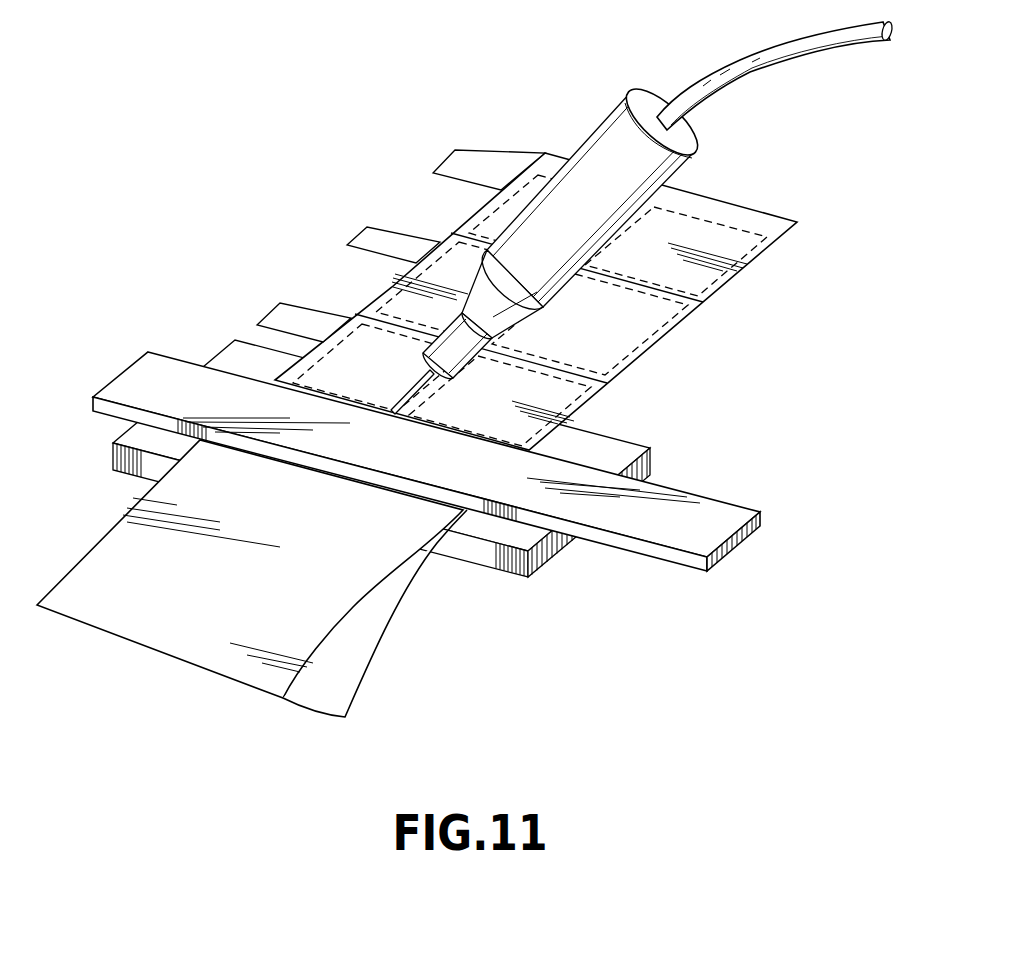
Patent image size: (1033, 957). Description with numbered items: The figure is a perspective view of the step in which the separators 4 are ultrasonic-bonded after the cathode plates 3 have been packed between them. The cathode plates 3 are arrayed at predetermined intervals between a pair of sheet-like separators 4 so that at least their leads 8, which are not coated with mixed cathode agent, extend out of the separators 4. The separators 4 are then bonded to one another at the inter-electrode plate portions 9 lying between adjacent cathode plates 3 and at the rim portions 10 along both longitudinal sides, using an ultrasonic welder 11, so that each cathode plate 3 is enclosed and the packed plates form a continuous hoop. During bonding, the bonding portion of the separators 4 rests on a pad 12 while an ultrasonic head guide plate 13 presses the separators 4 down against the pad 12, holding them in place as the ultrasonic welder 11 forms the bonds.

The cathode plate 3 is at (357, 353).
The separator 4 is at (365, 578).
The lead 8 is at (442, 166).
The inter-electrode plate portion 9 is at (573, 373).
The rim portion 10 is at (450, 230).
The ultrasonic welder 11 is at (603, 125).
The pad 12 is at (527, 538).
The ultrasonic head guide plate 13 is at (737, 510).